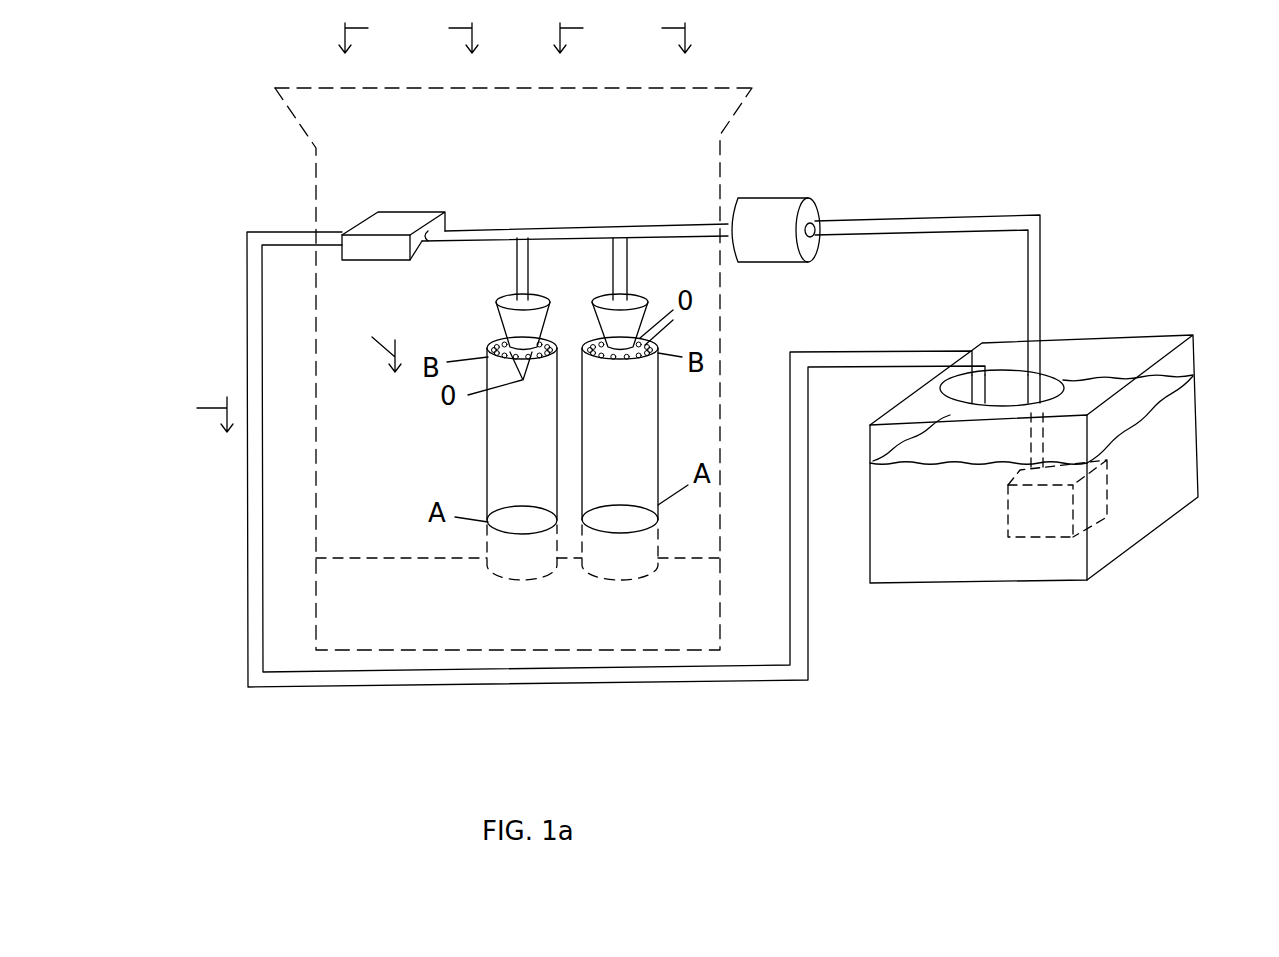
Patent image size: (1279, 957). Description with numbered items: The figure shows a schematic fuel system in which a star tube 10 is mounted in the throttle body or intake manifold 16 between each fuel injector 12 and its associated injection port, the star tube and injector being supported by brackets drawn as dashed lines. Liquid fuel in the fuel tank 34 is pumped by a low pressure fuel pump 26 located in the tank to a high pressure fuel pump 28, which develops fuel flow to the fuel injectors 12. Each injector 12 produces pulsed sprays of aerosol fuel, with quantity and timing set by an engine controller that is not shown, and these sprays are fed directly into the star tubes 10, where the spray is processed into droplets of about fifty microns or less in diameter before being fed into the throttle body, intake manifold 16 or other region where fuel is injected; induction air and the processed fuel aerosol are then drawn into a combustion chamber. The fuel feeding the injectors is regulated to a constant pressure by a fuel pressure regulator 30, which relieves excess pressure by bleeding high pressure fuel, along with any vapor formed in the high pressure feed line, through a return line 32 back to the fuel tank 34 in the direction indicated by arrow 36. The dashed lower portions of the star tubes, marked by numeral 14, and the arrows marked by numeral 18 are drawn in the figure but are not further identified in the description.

The star tube 10 is at (465, 434).
The fuel injector 12 is at (510, 333).
The container base 14 is at (487, 570).
The intake manifold 16 is at (726, 158).
The gas flow 18 is at (515, 192).
The low pressure fuel pump 26 is at (1060, 535).
The high pressure fuel pump 28 is at (788, 198).
The fuel pressure regulator 30 is at (397, 223).
The return line 32 is at (247, 315).
The fuel tank 34 is at (1098, 338).
The arrow 36 is at (192, 414).